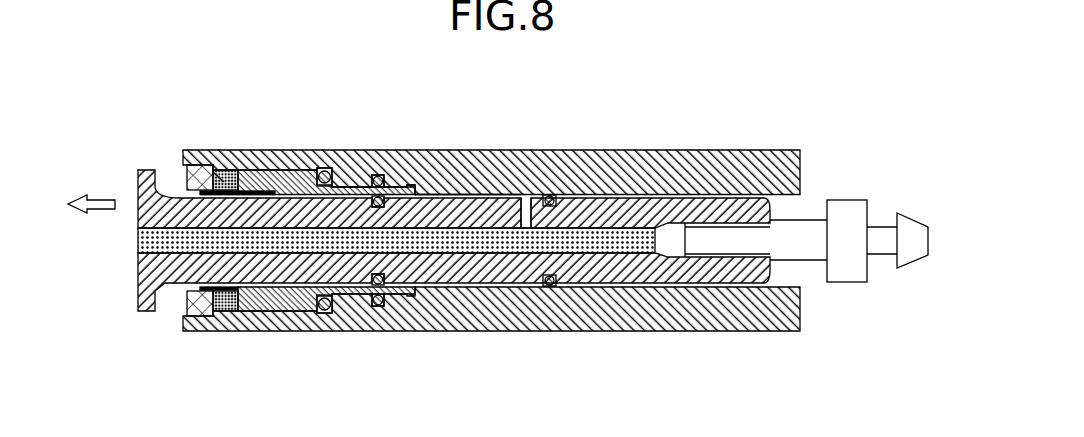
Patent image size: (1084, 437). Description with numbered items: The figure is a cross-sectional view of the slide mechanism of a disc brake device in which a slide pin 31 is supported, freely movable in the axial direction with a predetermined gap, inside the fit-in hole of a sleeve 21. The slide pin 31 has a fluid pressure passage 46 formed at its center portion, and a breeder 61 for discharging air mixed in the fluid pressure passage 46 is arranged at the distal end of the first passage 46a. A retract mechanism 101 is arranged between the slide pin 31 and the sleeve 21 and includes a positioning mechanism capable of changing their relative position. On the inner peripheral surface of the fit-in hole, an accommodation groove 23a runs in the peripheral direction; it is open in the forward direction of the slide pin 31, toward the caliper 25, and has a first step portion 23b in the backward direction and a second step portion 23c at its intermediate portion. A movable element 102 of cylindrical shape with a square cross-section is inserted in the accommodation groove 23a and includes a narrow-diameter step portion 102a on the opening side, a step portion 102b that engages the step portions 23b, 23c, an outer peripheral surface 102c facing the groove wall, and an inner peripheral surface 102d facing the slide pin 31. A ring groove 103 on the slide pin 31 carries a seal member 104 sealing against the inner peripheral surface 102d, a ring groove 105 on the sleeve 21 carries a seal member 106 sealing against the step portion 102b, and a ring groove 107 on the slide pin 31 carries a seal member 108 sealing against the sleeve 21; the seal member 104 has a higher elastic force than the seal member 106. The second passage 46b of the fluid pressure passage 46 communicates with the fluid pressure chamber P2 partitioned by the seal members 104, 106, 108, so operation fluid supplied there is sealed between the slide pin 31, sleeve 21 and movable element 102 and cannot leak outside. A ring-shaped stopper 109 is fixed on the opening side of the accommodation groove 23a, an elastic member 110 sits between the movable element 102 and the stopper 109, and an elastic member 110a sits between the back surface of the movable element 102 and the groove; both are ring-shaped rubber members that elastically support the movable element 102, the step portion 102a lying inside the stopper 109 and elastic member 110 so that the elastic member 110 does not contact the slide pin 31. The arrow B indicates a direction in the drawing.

The sleeve 21 is at (778, 153).
The fluid pressure passage 46 is at (454, 230).
The first passage 46a is at (623, 242).
The second passage 46b is at (527, 197).
The slide pin 31 is at (752, 184).
The caliper 25 is at (688, 220).
The breeder 61 is at (848, 217).
The retract mechanism 101 is at (337, 243).
The movable element 102 is at (261, 230).
The step portion 102a is at (188, 192).
The step portion 102b is at (344, 188).
The outer peripheral surface 102c is at (270, 152).
The inner peripheral surface 102d is at (266, 197).
The accommodation groove 23a is at (303, 168).
The first step portion 23b is at (407, 186).
The second step portion 23c is at (326, 168).
The ring groove 103 is at (383, 176).
The seal member 104 is at (386, 280).
The ring groove 105 is at (388, 201).
The seal member 106 is at (379, 307).
The ring groove 107 is at (551, 195).
The seal member 108 is at (550, 287).
The stopper 109 is at (199, 331).
The elastic member 110 is at (210, 165).
The elastic member 110a is at (324, 314).
The fluid pressure chamber P2 is at (483, 194).
The direction arrow B is at (99, 214).